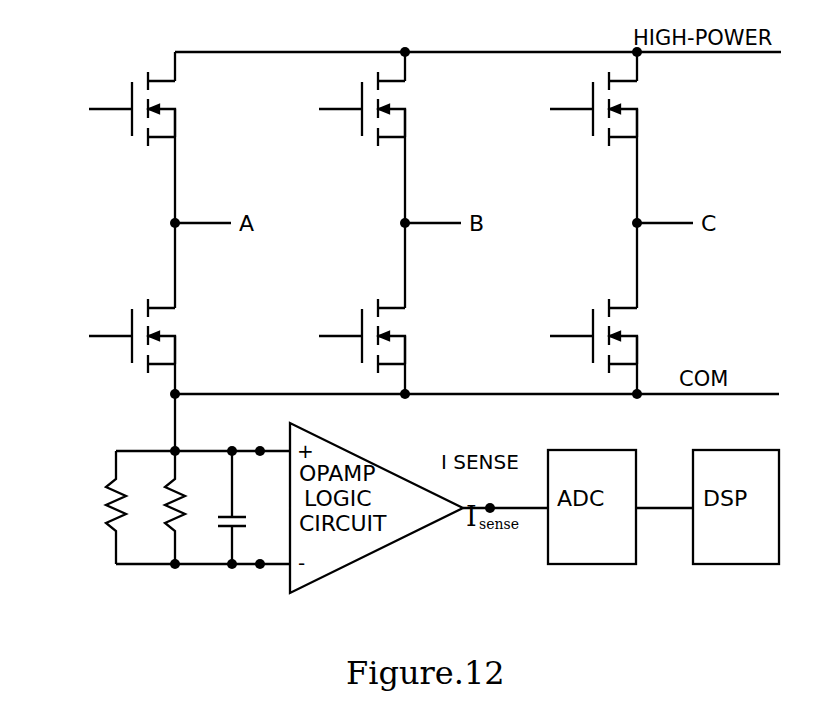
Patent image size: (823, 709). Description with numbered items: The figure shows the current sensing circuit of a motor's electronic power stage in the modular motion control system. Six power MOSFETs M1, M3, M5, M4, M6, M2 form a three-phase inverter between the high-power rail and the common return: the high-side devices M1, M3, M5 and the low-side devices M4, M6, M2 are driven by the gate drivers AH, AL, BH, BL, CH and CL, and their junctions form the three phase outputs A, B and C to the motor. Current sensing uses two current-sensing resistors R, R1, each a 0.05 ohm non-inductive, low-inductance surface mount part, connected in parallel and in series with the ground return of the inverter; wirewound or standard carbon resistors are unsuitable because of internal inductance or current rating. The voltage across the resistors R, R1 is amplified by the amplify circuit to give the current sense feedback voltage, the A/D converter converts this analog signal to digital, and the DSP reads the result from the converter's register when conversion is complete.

The high-side MOSFET phase A M1 is at (106, 104).
The high-side MOSFET phase B M3 is at (338, 104).
The high-side MOSFET phase C M5 is at (569, 104).
The low-side MOSFET phase A M4 is at (106, 331).
The low-side MOSFET phase B M6 is at (338, 331).
The low-side MOSFET phase C M2 is at (569, 331).
The current-sensing resistor R is at (95, 507).
The current-sensing resistor R1 is at (160, 507).